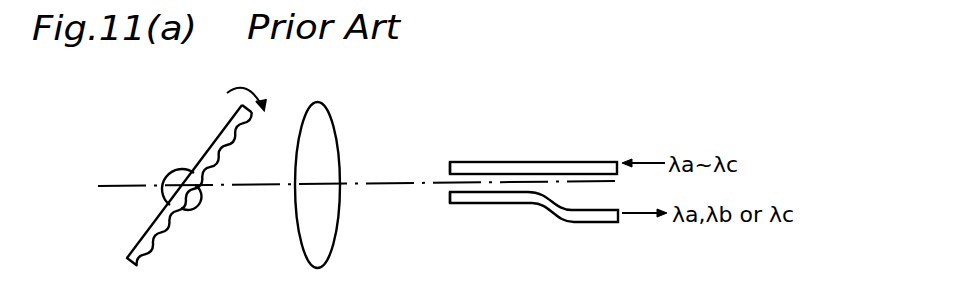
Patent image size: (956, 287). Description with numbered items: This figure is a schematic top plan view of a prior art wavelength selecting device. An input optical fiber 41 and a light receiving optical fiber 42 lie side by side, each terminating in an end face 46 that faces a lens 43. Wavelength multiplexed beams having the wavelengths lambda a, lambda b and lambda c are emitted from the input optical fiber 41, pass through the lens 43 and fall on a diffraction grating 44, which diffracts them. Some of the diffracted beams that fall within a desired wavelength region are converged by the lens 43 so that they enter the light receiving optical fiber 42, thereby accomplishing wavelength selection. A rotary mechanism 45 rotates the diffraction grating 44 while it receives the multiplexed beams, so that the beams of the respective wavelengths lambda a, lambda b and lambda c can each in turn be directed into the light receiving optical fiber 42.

The input optical fiber 41 is at (560, 160).
The light receiving optical fiber 42 is at (543, 211).
The lens 43 is at (320, 122).
The diffraction grating 44 is at (220, 130).
The rotary mechanism 45 is at (178, 170).
The end face of each of the optical fibers 46 is at (450, 167).